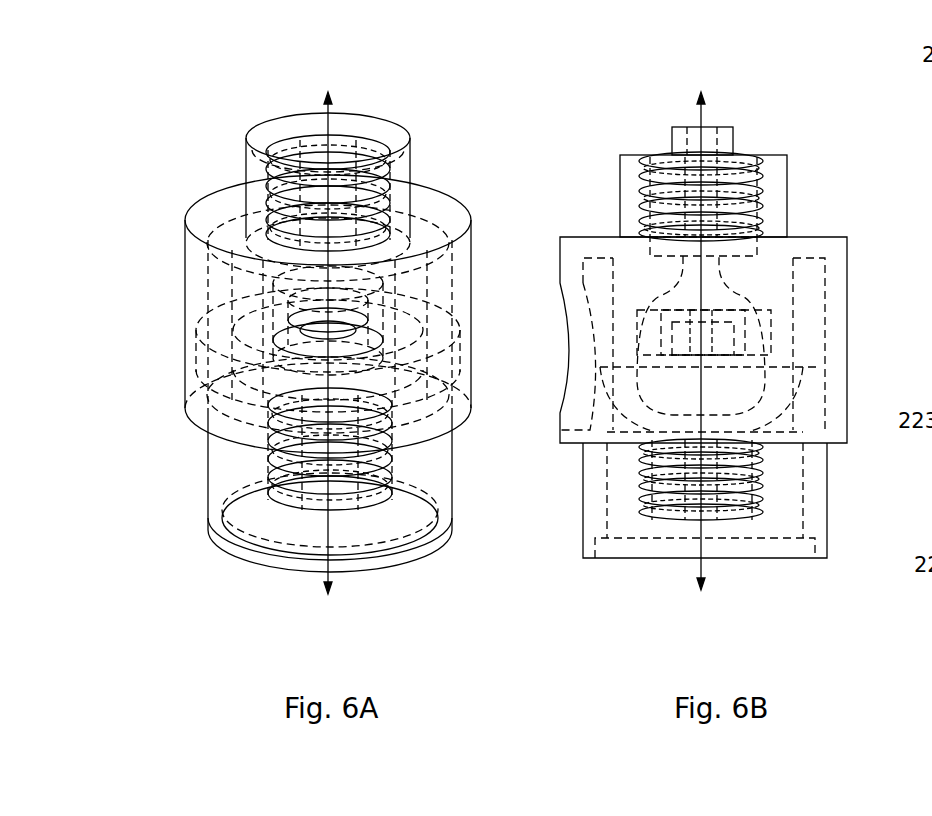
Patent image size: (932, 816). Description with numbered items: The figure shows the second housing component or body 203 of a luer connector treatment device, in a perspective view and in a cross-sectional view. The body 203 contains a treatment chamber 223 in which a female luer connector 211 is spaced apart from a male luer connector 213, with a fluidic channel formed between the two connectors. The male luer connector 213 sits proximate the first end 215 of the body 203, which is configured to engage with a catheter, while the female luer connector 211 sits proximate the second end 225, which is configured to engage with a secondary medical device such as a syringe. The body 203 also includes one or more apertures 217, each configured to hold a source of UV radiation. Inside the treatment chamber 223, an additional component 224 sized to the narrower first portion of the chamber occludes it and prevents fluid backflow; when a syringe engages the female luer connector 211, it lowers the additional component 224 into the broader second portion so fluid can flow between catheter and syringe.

In FIG. 6A, the second housing component or body 203 is at (219, 106).
In FIG. 6B, the second housing component or body 203 is at (606, 110).
In FIG. 6A, the female luer connector 211 is at (373, 507).
In FIG. 6B, the female luer connector 211 is at (760, 485).
In FIG. 6A, the male luer connector 213 is at (387, 156).
In FIG. 6B, the male luer connector 213 is at (765, 177).
In FIG. 6A, the first end 215 is at (343, 114).
In FIG. 6B, the first end 215 is at (733, 127).
In FIG. 6A, the aperture 217 is at (196, 336).
In FIG. 6A, the treatment chamber 223 is at (343, 277).
In FIG. 6B, the treatment chamber 223 is at (730, 290).
In FIG. 6A, the additional component 224 is at (343, 335).
In FIG. 6B, the additional component 224 is at (725, 342).
In FIG. 6A, the second end 225 is at (228, 551).
In FIG. 6B, the second end 225 is at (590, 561).